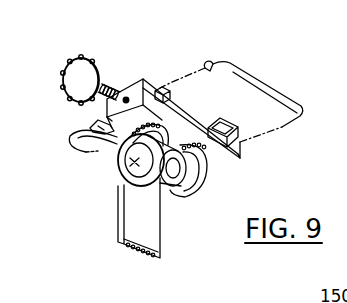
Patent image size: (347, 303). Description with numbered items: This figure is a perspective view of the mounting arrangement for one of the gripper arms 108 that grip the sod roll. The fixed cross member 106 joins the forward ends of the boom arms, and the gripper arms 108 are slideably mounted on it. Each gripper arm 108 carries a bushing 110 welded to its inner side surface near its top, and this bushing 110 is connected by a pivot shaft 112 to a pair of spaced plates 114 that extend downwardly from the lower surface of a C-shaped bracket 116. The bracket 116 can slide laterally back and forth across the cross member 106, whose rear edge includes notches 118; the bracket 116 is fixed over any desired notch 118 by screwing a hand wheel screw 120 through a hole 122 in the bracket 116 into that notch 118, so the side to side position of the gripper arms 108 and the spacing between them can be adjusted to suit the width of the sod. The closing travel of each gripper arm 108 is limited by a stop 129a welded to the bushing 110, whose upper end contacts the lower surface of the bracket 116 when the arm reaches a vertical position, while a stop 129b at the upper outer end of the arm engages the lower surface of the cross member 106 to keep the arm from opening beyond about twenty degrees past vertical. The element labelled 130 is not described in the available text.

The cross member 106 is at (277, 88).
The gripper arm 108 is at (124, 230).
The bushing 110 is at (185, 192).
The pivot shaft 112 is at (120, 170).
The spaced plates 114 is at (117, 153).
The C-shaped bracket 116 is at (143, 79).
The notch 118 is at (209, 65).
The hand wheel screw 120 is at (77, 73).
The hole 122 is at (126, 97).
The stop 129a is at (167, 193).
The stop 129b is at (114, 147).
The retainer 130 is at (92, 124).